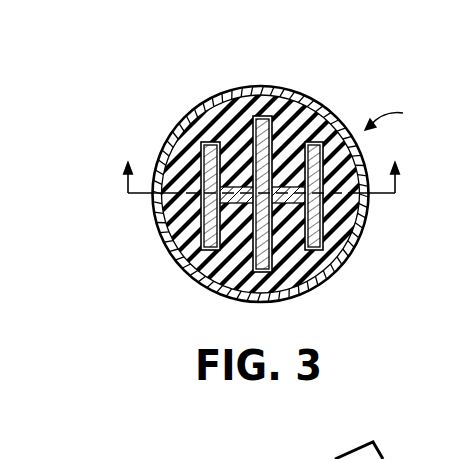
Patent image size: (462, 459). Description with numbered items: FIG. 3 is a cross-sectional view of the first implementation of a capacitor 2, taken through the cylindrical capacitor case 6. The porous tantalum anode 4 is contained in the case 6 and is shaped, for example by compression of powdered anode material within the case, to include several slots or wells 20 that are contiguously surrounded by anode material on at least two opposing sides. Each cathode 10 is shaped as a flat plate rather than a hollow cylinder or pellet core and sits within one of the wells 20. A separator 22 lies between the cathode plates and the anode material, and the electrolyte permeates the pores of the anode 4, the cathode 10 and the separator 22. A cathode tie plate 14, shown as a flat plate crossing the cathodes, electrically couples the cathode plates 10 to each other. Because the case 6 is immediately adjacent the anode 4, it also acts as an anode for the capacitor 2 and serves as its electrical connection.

The capacitor 2 is at (271, 149).
The porous tantalum anode 4 is at (348, 256).
The capacitor case 6 is at (368, 210).
The cathode 10 is at (208, 252).
The cathode tie plate 14 is at (200, 197).
The slot or well 20 is at (303, 140).
The separator 22 is at (200, 141).